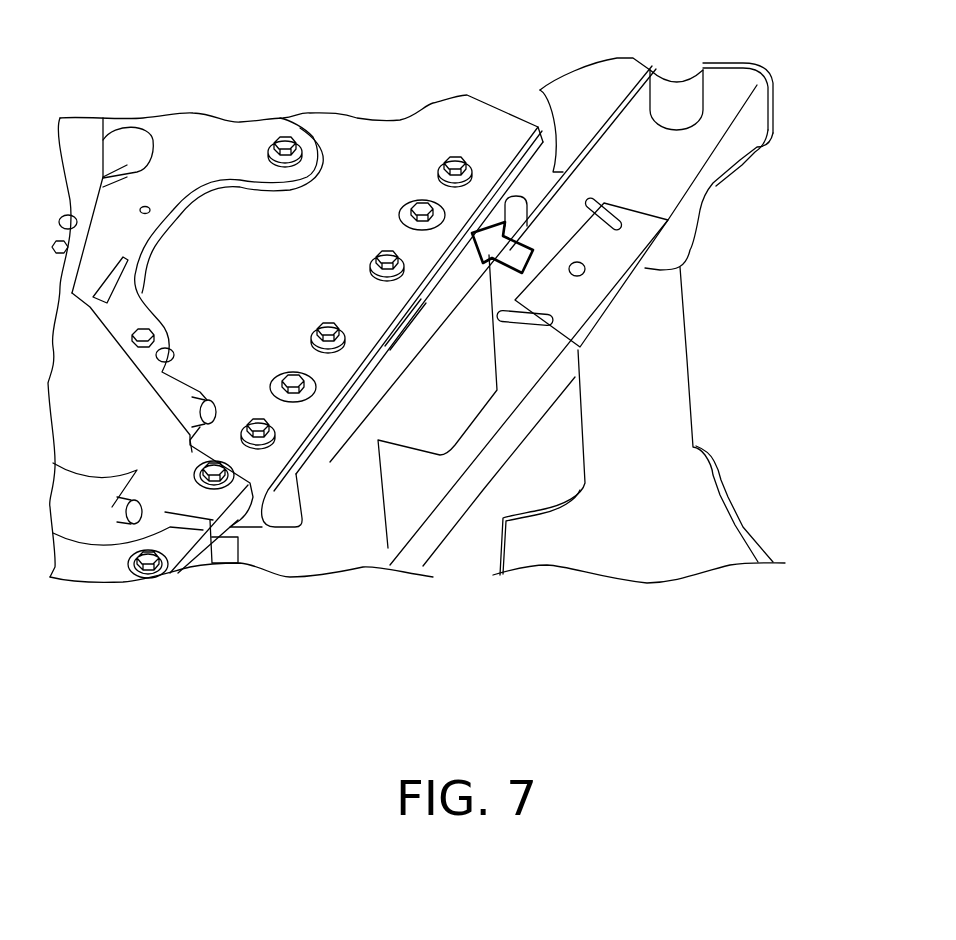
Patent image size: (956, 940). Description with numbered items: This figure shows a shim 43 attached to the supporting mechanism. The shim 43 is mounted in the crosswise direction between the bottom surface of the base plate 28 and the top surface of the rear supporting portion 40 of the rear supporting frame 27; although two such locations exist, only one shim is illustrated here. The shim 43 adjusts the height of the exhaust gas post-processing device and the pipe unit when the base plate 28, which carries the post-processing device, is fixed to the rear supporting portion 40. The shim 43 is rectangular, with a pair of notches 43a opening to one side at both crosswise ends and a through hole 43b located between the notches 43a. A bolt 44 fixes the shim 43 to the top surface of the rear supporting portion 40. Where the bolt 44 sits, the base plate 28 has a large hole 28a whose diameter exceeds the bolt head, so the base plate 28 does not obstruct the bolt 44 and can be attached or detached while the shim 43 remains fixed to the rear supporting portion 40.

The rear supporting frame 27 is at (759, 492).
The base plate 28 is at (358, 138).
The large hole 28a is at (398, 228).
The rear supporting portion 40 is at (313, 462).
The shim 43 is at (645, 233).
The notches 43a is at (612, 200).
The through hole 43b is at (584, 274).
The bolt 44 is at (421, 205).